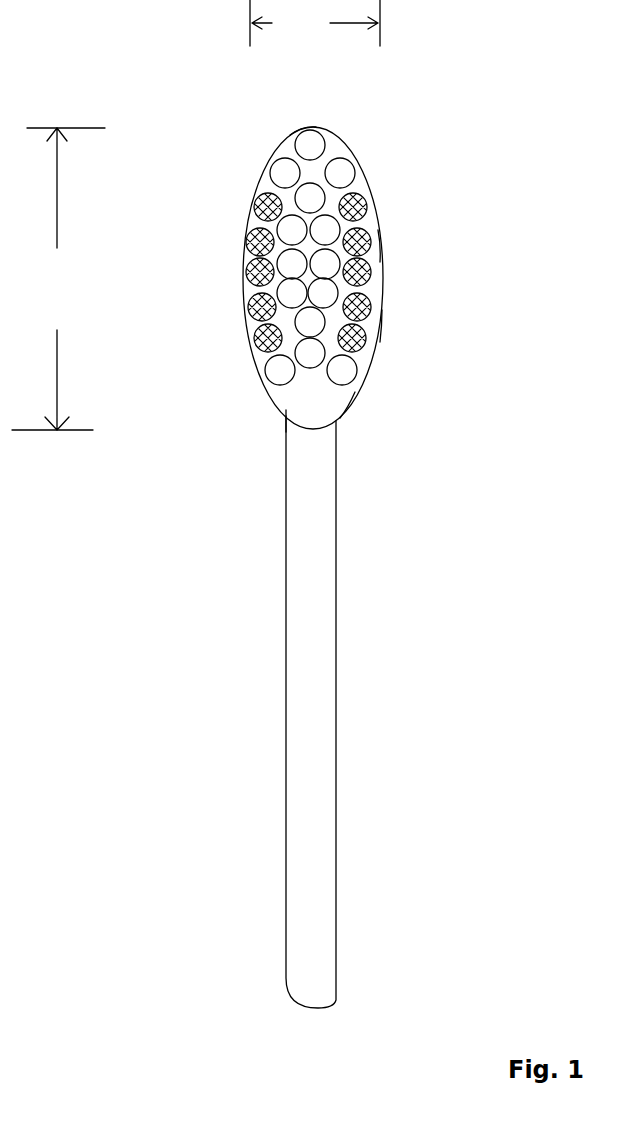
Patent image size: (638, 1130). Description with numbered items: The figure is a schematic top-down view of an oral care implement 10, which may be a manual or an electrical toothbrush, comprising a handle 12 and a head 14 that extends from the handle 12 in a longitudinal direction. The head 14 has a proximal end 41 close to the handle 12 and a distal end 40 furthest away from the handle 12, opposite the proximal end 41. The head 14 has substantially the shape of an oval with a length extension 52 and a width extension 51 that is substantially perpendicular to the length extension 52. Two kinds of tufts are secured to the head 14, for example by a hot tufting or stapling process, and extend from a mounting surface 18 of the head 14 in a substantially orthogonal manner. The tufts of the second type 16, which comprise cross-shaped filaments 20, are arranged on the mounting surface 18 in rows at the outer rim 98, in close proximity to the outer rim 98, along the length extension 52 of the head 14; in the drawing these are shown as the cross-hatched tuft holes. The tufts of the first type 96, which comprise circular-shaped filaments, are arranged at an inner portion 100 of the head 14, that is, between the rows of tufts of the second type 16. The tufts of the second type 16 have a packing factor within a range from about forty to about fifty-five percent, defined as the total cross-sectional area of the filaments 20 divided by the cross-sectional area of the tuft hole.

The oral care implement 10 is at (452, 137).
The handle 12 is at (320, 803).
The head 14 is at (378, 383).
The tufts of the second type 16 is at (362, 240).
The mounting surface 18 is at (344, 418).
The cross-shaped filaments 20 is at (370, 243).
The distal end 40 is at (289, 110).
The proximal end 41 is at (275, 440).
The width extension 51 is at (315, 23).
The length extension 52 is at (58, 279).
The tufts of the first type 96 is at (270, 376).
The outer rim 98 is at (393, 340).
The inner portion 100 is at (326, 176).